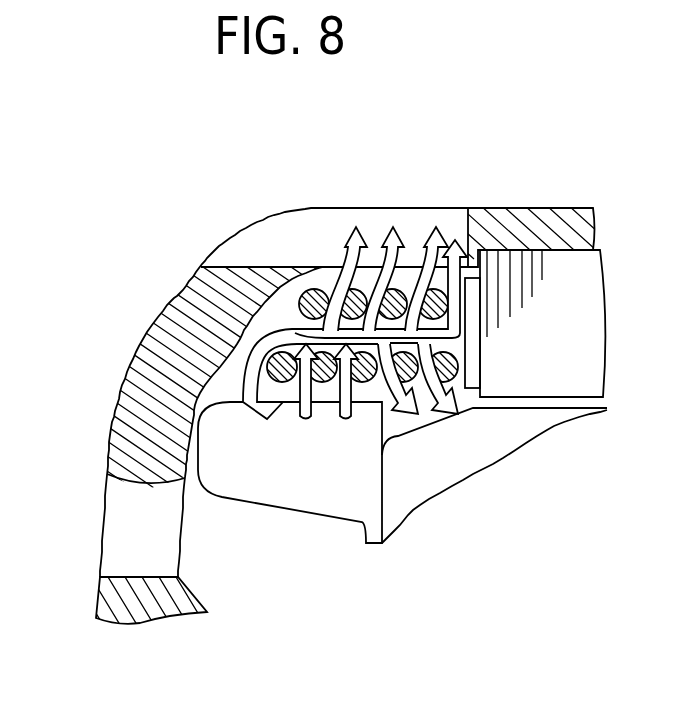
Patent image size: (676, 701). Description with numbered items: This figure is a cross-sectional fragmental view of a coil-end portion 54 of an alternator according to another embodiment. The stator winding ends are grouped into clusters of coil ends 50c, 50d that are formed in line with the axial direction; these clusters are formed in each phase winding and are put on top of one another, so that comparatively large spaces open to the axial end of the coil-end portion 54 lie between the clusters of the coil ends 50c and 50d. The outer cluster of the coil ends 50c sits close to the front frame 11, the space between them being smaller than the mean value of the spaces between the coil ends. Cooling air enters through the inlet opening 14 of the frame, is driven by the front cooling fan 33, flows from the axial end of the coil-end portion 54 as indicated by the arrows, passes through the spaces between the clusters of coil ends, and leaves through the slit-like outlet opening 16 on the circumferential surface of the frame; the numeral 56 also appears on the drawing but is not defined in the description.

The front frame 11 is at (177, 356).
The inlet opening 14 is at (127, 527).
The outlet opening 16 is at (338, 232).
The front cooling fan 33 is at (243, 452).
The outer cluster of coil ends 50c is at (290, 300).
The inner cluster of coil ends 50d is at (258, 352).
The coil-end portion 54 is at (316, 244).
The roller 56 is at (325, 295).